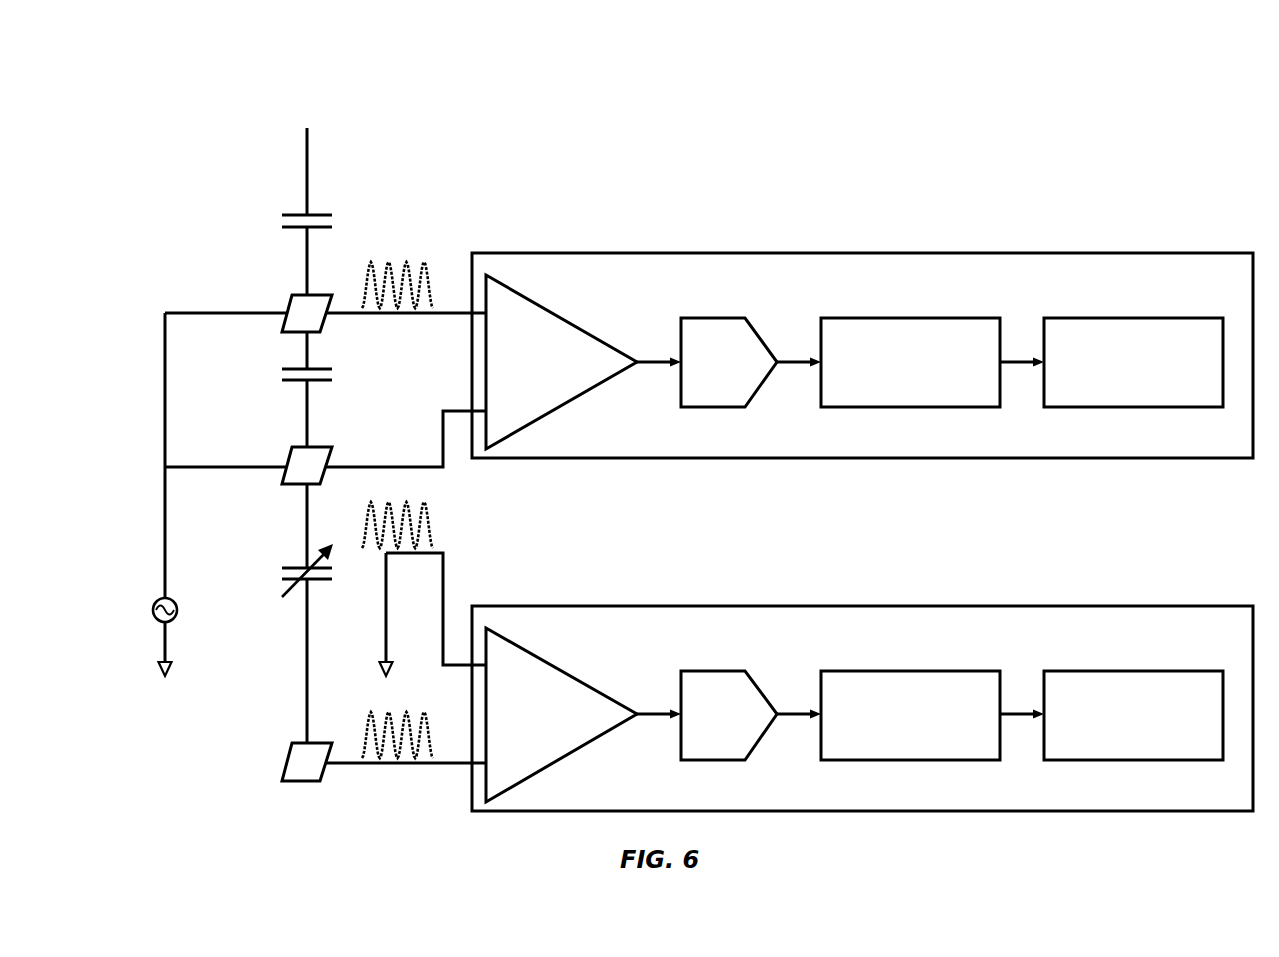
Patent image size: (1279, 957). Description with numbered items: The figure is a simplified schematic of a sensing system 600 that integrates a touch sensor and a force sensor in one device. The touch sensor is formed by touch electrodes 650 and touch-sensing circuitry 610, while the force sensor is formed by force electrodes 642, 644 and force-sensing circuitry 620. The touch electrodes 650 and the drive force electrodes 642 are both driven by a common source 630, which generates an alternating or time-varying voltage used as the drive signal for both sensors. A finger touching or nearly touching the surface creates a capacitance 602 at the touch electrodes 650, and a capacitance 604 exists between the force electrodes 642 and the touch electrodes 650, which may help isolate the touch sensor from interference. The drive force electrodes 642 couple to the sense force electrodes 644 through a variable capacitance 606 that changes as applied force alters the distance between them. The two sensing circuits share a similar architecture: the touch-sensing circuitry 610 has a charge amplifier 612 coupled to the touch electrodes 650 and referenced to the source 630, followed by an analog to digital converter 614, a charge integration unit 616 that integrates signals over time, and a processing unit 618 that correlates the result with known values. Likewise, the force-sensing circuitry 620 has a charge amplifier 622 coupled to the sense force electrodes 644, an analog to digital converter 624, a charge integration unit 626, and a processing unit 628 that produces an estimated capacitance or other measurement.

The sensing system 600 is at (162, 88).
The capacitance 602 is at (280, 221).
The capacitance 604 is at (280, 375).
The variable capacitance 606 is at (280, 574).
The touch-sensing circuitry 610 is at (1179, 253).
The charge amplifier 612 is at (597, 336).
The analog to digital converter 614 is at (716, 318).
The charge integration unit 616 is at (912, 318).
The processing unit 618 is at (1135, 318).
The force-sensing circuitry 620 is at (1179, 606).
The charge amplifier 622 is at (597, 689).
The analog to digital converter 624 is at (716, 671).
The charge integration unit 626 is at (912, 671).
The processing unit 628 is at (1135, 671).
The common source 630 is at (247, 625).
The force electrodes 642 is at (300, 444).
The force electrodes 644 is at (300, 740).
The touch electrodes 650 is at (300, 292).